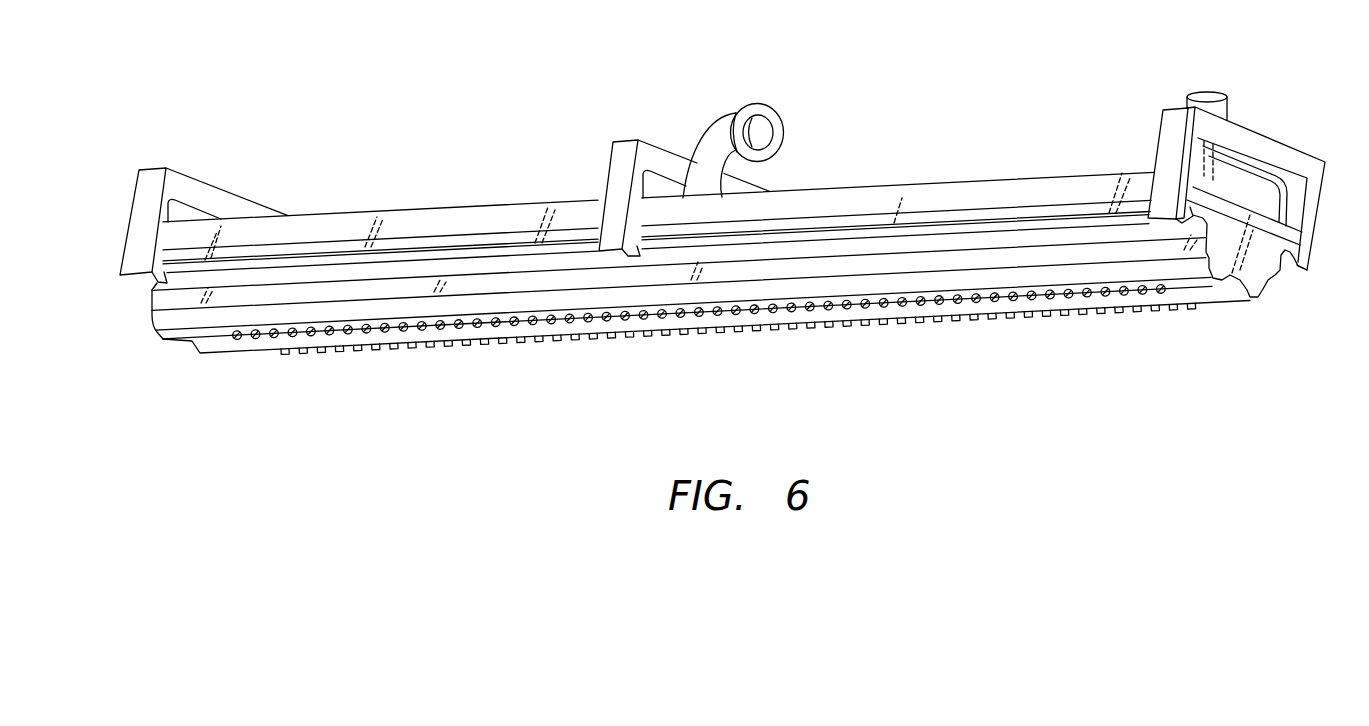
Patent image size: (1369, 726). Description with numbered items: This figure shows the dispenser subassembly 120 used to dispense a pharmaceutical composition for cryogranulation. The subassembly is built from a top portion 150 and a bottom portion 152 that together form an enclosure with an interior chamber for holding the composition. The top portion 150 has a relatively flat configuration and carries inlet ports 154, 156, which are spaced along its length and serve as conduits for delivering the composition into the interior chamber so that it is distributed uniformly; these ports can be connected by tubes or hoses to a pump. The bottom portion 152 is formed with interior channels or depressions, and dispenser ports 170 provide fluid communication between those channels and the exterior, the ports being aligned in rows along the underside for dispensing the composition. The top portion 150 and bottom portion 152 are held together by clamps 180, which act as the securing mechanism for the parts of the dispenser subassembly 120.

The dispenser subassembly 120 is at (957, 87).
The top portion 150 is at (483, 207).
The bottom portion 152 is at (163, 340).
The inlet port 154 is at (767, 106).
The inlet port 156 is at (1217, 93).
The dispenser ports 170 is at (585, 322).
The clamps 180 is at (160, 168).